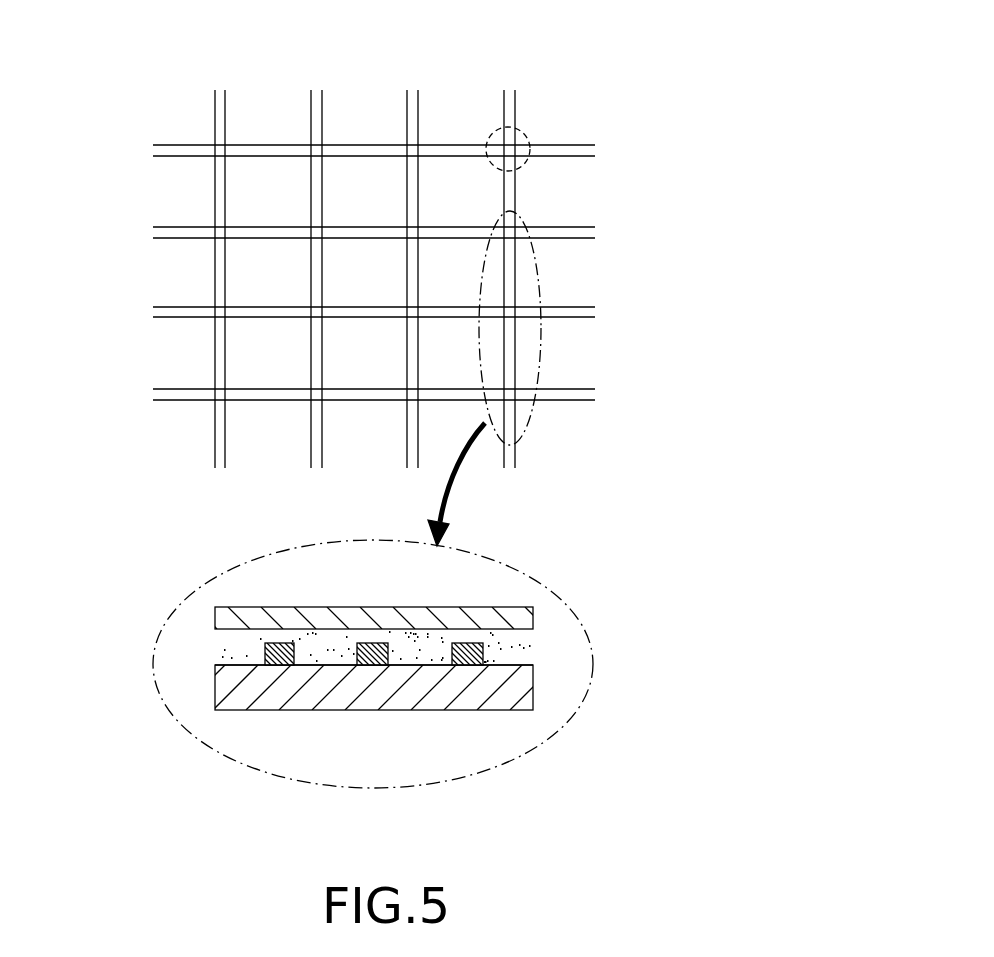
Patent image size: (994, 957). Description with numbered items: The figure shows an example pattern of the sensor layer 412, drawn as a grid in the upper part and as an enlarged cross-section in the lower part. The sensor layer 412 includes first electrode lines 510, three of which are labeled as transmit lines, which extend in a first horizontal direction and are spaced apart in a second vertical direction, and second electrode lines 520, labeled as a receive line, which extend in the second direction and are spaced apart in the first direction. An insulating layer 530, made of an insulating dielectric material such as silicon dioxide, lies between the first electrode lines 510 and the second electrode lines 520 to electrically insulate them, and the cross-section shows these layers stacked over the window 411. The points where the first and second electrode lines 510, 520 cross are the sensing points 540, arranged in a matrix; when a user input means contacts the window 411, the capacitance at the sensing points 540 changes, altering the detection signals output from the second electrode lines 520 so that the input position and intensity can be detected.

The sensor layer 412 is at (592, 68).
The window 411 is at (517, 692).
The first electrode lines 510 is at (573, 305).
The second electrode lines 520 is at (515, 192).
The insulating layer 530 is at (222, 650).
The sensing points 540 is at (525, 130).